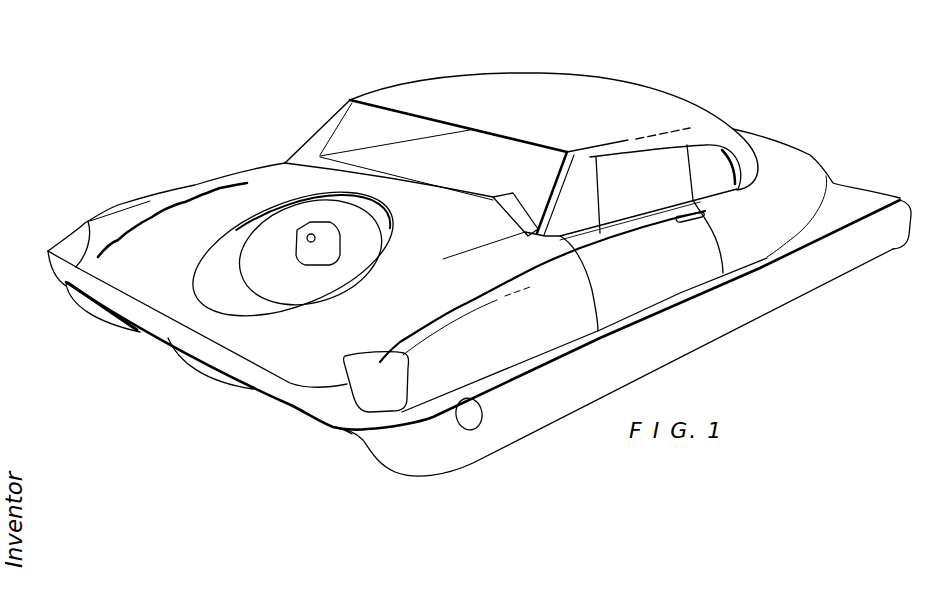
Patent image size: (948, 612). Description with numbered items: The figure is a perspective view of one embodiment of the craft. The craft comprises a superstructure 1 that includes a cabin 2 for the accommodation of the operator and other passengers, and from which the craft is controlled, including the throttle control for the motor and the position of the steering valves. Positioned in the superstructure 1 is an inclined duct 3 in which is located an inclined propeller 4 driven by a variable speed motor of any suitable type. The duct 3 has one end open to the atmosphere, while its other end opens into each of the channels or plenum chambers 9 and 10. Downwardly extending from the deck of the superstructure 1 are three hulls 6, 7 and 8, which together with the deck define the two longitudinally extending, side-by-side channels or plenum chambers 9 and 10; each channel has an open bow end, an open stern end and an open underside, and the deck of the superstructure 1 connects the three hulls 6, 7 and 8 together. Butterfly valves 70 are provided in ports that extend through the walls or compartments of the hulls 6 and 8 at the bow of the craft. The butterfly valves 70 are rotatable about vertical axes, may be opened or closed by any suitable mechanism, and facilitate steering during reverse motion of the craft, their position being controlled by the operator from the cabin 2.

The superstructure 1 is at (181, 177).
The cabin 2 is at (574, 92).
The inclined duct 3 is at (227, 283).
The inclined propeller 4 is at (275, 232).
The hull 6 is at (100, 310).
The hull 7 is at (202, 366).
The hull 8 is at (383, 457).
The channel or plenum chamber 9 is at (145, 332).
The channel or plenum chamber 10 is at (311, 427).
The butterfly valve 70 is at (472, 410).